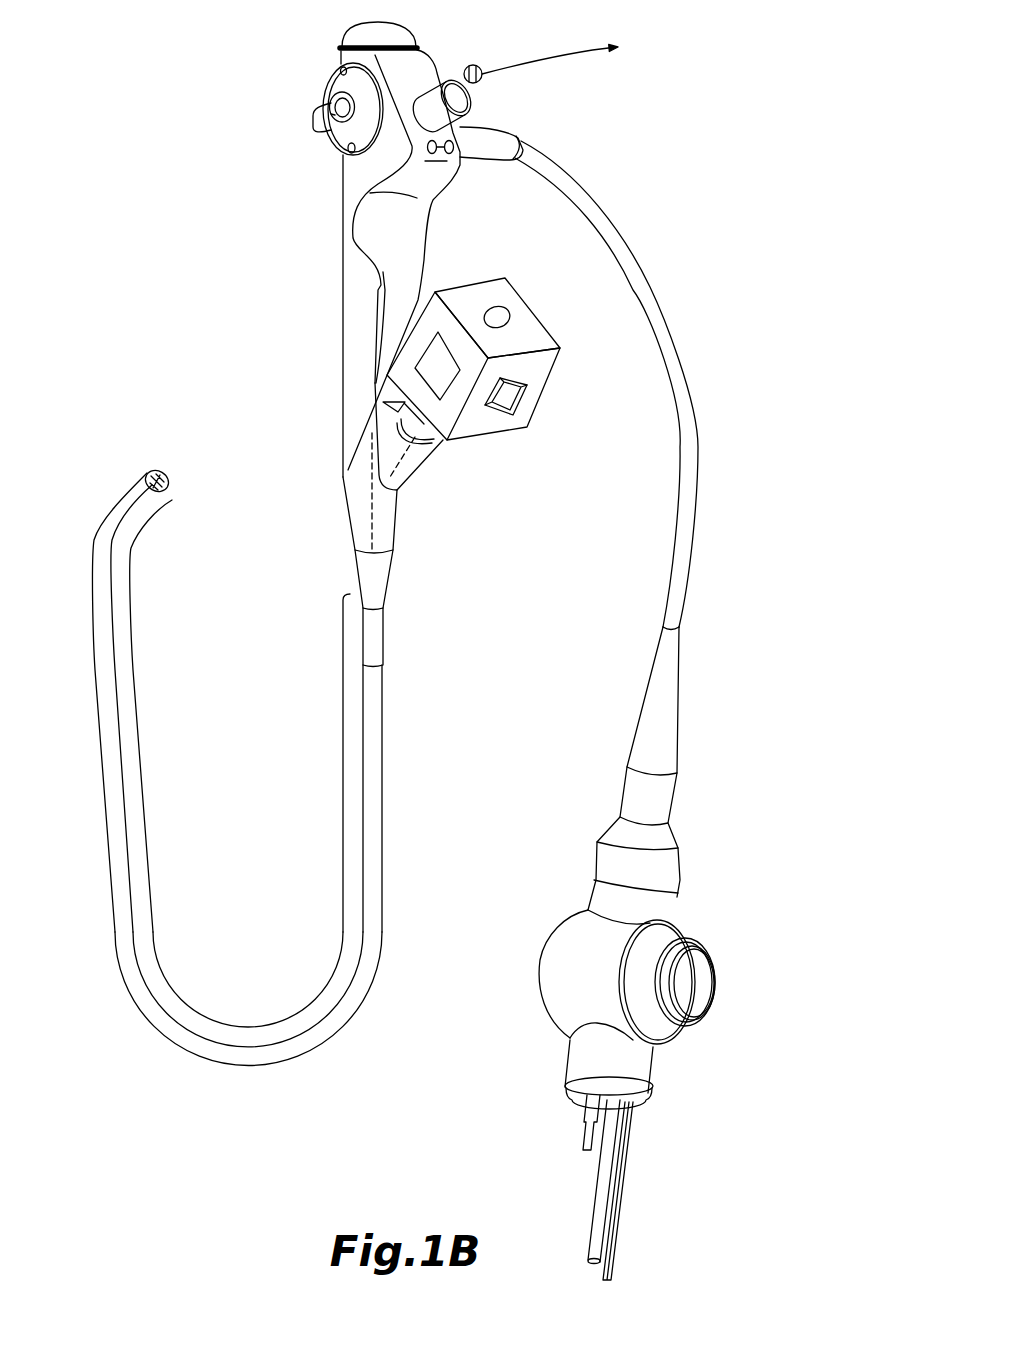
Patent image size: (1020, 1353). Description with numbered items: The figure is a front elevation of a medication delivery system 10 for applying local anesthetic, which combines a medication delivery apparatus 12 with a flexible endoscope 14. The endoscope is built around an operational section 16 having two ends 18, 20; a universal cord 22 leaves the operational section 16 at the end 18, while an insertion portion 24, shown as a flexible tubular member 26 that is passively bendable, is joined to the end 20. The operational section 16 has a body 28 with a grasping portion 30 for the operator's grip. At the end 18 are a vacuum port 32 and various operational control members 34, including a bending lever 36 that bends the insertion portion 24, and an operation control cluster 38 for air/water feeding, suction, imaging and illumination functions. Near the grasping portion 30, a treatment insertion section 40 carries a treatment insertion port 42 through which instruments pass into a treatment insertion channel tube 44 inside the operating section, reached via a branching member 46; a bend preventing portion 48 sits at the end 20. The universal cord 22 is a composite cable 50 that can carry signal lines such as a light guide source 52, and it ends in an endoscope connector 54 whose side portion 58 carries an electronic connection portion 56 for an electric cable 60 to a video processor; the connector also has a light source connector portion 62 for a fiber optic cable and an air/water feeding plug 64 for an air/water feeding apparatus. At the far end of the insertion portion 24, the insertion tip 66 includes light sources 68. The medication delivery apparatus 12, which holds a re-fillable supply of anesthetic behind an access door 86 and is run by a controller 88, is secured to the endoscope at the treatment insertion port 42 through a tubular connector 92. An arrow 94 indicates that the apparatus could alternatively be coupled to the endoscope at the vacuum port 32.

The medication delivery system 10 is at (579, 133).
The medication delivery apparatus 12 is at (549, 377).
The flexible endoscope 14 is at (341, 438).
The operational section 16 is at (394, 511).
The end 18 is at (345, 175).
The end 20 is at (395, 541).
The universal cord 22 is at (703, 405).
The insertion portion 24 is at (307, 1045).
The flexible tubular member 26 is at (236, 1019).
The body 28 is at (342, 325).
The grasping portion 30 is at (425, 238).
The vacuum port 32 is at (464, 66).
The operational control members 34 is at (468, 100).
The bending lever 36 is at (313, 118).
The operation control cluster 38 is at (461, 148).
The treatment insertion section 40 is at (423, 457).
The treatment insertion port 42 is at (384, 403).
The treatment insertion channel tube 44 is at (370, 528).
The branching member 46 is at (413, 490).
The bend preventing portion 48 is at (390, 579).
The composite cable 50 is at (180, 1040).
The light guide source 52 is at (617, 1247).
The endoscope connector 54 is at (540, 988).
The electronic connection portion 56 is at (722, 970).
The side portion 58 is at (670, 933).
The electric cable 60 is at (713, 1010).
The light source connector portion 62 is at (640, 1125).
The air/water feeding plug 64 is at (580, 1122).
The insertion tip 66 is at (151, 471).
The light sources 68 is at (596, 1203).
The access door 86 is at (432, 356).
The controller 88 is at (509, 408).
The tubular connector 92 is at (437, 440).
The arrow 94 is at (478, 56).